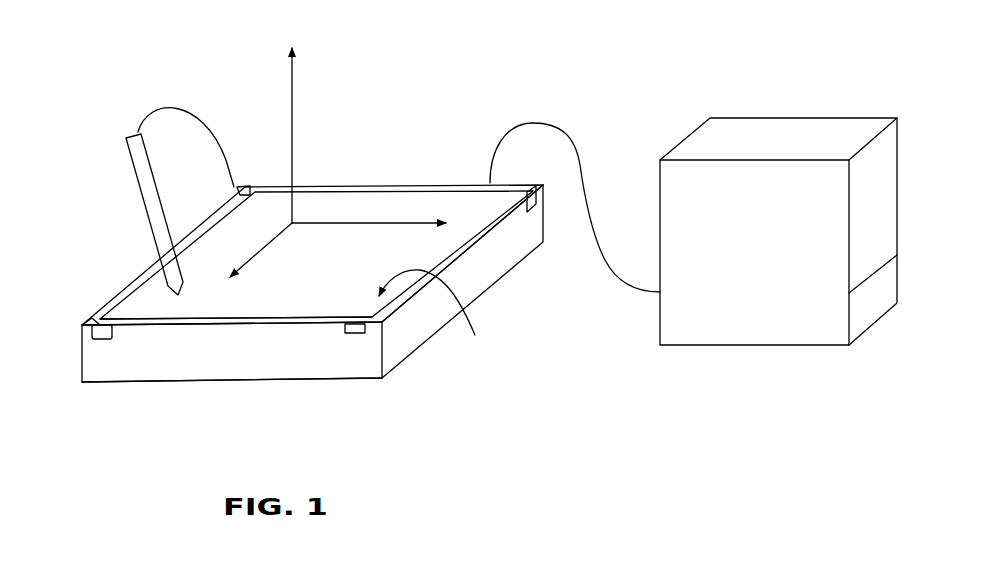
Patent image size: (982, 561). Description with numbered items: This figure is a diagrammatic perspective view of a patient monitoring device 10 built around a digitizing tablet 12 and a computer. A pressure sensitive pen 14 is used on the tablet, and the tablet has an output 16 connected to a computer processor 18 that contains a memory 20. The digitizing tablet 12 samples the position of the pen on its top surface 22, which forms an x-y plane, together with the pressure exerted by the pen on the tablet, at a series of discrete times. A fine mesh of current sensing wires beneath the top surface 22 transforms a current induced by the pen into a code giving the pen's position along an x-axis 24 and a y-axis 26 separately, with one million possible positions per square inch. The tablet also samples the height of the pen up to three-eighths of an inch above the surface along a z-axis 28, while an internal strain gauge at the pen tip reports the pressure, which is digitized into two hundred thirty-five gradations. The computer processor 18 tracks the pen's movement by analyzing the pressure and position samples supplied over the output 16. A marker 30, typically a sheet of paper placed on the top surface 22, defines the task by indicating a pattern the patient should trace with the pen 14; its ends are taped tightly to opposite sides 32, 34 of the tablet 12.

The patient monitoring device 10 is at (520, 415).
The digitizing tablet 12 is at (212, 383).
The pressure sensitive pen 14 is at (143, 196).
The output 16 is at (575, 152).
The computer processor 18 is at (683, 345).
The memory 20 is at (870, 310).
The top surface 22 is at (435, 318).
The x-axis 24 is at (272, 242).
The y-axis 26 is at (373, 223).
The z-axis 28 is at (293, 120).
The marker 30 is at (298, 318).
The side 32 is at (509, 286).
The side 34 is at (62, 355).